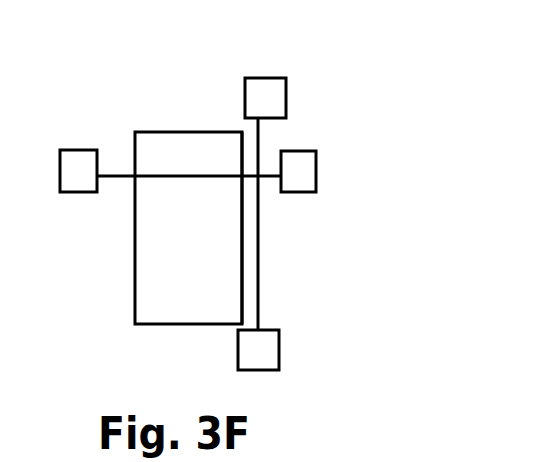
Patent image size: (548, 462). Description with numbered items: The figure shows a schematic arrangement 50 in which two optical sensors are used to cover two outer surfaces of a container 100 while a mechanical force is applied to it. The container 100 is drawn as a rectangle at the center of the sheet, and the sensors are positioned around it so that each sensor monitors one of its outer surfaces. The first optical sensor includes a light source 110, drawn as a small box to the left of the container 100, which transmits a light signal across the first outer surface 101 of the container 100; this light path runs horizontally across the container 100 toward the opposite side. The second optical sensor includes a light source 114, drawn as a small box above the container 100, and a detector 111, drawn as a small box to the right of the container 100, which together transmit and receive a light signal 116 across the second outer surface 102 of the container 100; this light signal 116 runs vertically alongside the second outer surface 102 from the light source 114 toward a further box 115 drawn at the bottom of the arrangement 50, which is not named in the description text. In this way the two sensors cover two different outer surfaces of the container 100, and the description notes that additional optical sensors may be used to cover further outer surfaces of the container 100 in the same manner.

The arrangement 50 is at (143, 95).
The container 100 is at (125, 286).
The first outer surface 101 is at (192, 234).
The second outer surface 102 is at (242, 270).
The light source 110 is at (80, 149).
The detector 111 is at (312, 151).
The light source 114 is at (253, 79).
The fourth contact pad 115 is at (281, 353).
The light signal 116 is at (259, 218).